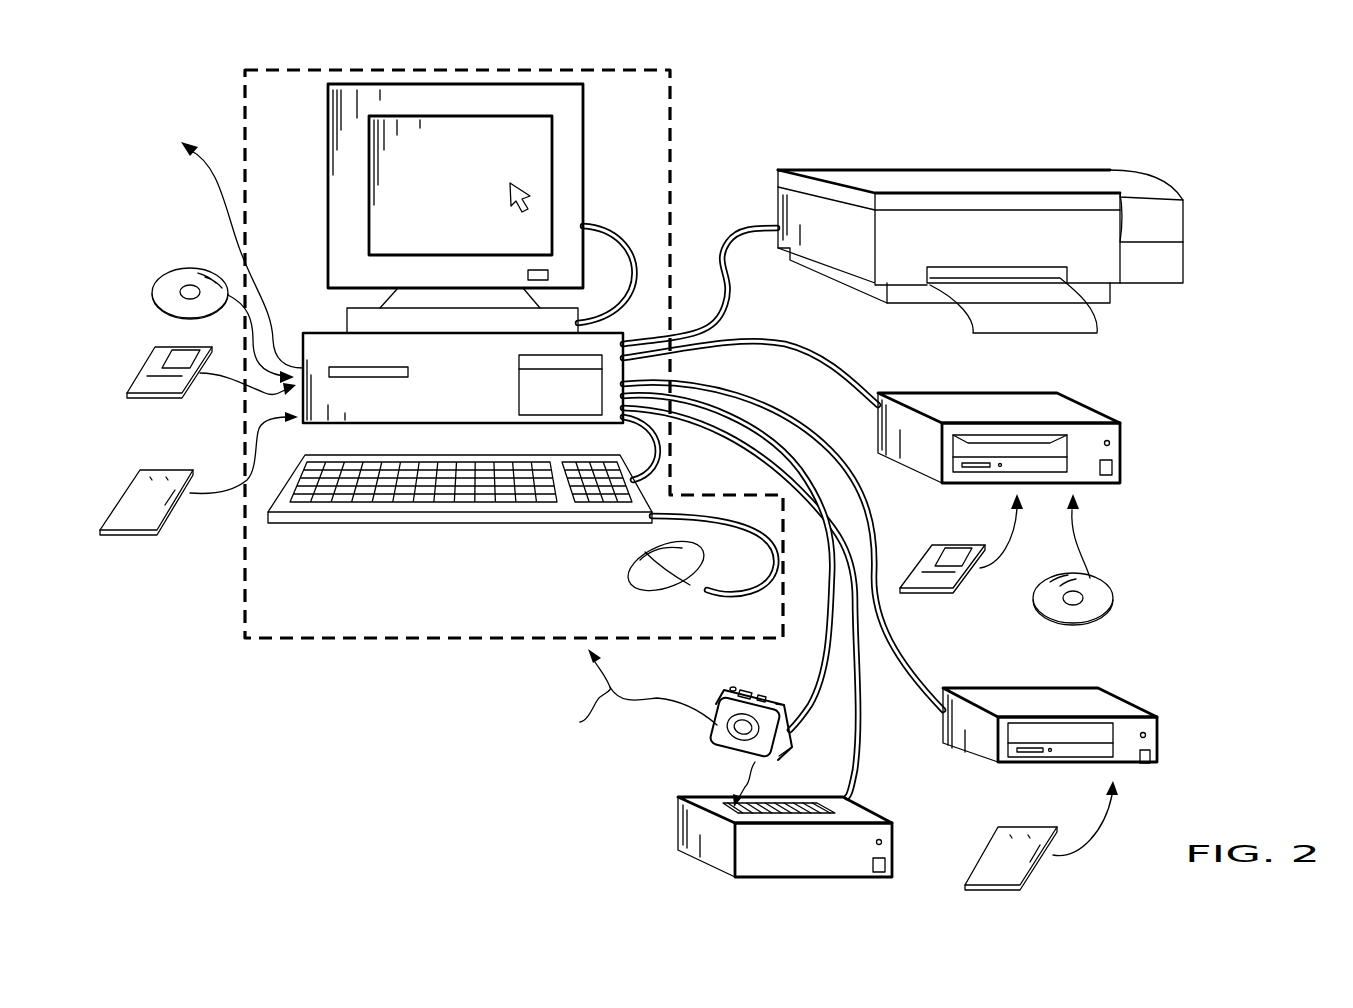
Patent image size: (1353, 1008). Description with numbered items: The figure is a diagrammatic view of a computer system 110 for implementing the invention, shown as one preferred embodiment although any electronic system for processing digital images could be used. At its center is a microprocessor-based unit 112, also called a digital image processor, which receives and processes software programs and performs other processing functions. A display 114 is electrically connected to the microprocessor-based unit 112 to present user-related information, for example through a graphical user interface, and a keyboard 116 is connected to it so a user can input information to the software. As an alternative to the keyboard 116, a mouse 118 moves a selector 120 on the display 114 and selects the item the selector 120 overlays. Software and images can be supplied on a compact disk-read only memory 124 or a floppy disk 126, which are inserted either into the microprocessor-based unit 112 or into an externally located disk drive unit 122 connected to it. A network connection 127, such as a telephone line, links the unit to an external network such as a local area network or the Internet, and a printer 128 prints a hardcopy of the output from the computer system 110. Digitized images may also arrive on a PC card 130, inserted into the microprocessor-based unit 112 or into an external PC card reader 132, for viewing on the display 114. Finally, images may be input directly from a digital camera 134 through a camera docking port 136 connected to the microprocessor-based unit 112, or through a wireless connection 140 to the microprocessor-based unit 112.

The computer system 110 is at (672, 98).
The microprocessor-based unit 112 is at (343, 330).
The display 114 is at (590, 106).
The keyboard 116 is at (420, 520).
The mouse 118 is at (650, 578).
The selector 120 is at (528, 191).
The disk drive unit 122 is at (1082, 410).
The compact disk-read only memory (CD-ROM) 124 is at (170, 277).
The floppy disk 126 is at (147, 368).
The network connection 127 is at (214, 170).
The printer 128 is at (935, 172).
The personal computer card (PC card) 130 is at (127, 497).
The PC card reader 132 is at (1115, 707).
The digital camera 134 is at (717, 737).
The camera docking port 136 is at (680, 830).
The wireless connection 140 is at (622, 691).